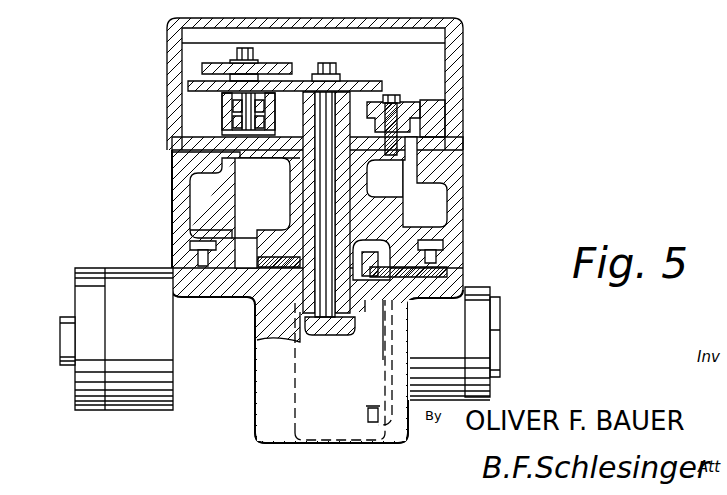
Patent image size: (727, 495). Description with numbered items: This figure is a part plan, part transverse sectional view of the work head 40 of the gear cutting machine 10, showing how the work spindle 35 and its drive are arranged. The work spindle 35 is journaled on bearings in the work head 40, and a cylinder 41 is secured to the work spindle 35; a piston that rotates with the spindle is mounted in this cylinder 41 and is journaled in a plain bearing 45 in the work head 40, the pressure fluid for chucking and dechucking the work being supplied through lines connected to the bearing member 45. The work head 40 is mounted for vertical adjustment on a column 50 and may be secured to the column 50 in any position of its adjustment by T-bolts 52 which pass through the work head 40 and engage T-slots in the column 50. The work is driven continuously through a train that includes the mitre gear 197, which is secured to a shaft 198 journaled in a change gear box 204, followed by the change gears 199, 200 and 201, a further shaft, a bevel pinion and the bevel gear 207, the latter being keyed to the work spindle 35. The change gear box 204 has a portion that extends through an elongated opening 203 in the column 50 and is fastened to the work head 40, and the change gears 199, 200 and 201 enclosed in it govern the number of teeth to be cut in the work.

The pump assembly 10 is at (470, 1).
The work spindle 35 is at (492, 297).
The work head 40 is at (200, 410).
The cylinder 41 is at (150, 410).
The plain bearing 45 is at (70, 340).
The column 50 is at (455, 202).
The T-bolts 52 is at (207, 262).
The mitre gear 197 is at (306, 333).
The shaft 198 is at (325, 180).
The change gear 199 is at (375, 82).
The change gear 200 is at (206, 92).
The change gear 201 is at (277, 71).
The elongated opening 203 is at (243, 243).
The change gear box 204 is at (455, 87).
The bevel gear 207 is at (367, 416).